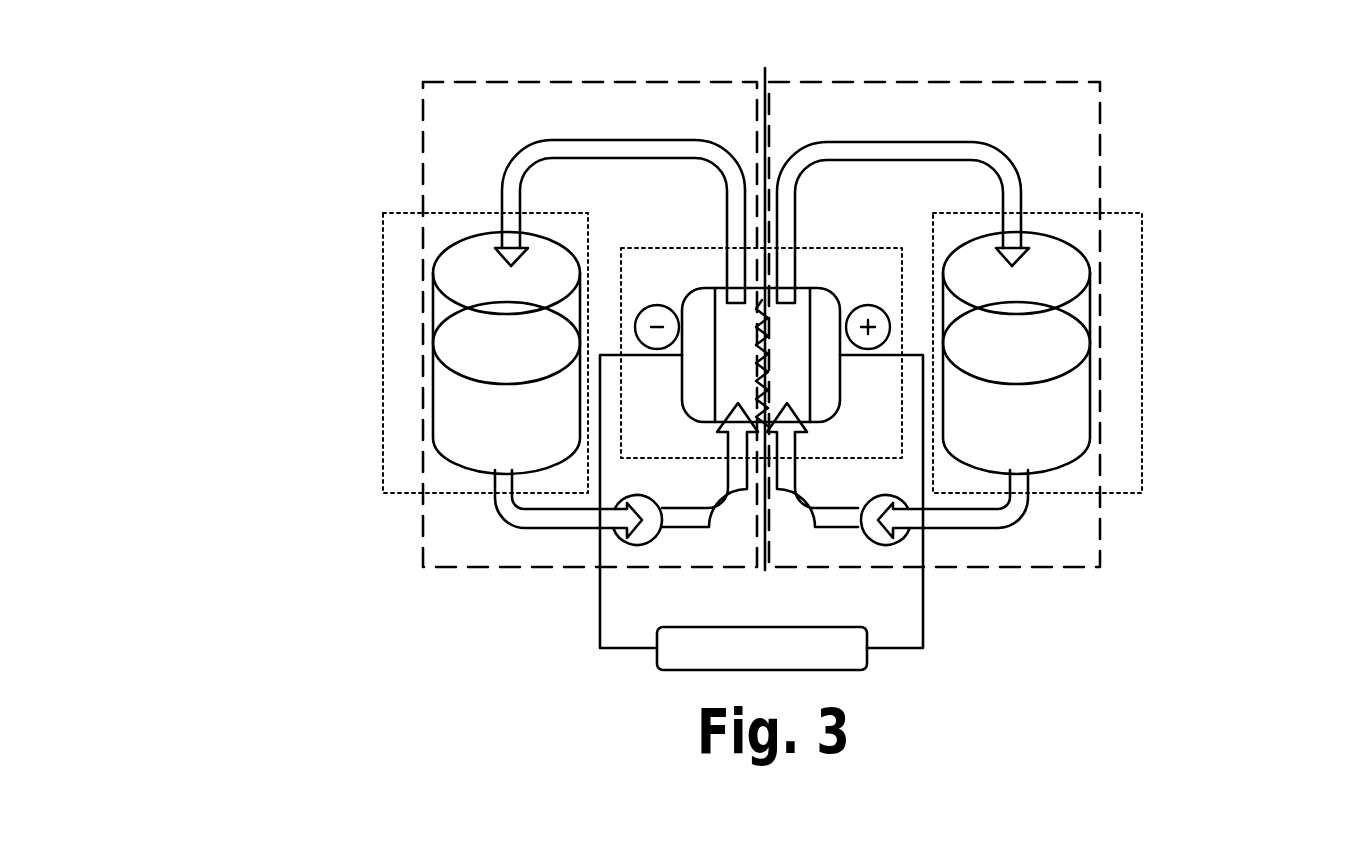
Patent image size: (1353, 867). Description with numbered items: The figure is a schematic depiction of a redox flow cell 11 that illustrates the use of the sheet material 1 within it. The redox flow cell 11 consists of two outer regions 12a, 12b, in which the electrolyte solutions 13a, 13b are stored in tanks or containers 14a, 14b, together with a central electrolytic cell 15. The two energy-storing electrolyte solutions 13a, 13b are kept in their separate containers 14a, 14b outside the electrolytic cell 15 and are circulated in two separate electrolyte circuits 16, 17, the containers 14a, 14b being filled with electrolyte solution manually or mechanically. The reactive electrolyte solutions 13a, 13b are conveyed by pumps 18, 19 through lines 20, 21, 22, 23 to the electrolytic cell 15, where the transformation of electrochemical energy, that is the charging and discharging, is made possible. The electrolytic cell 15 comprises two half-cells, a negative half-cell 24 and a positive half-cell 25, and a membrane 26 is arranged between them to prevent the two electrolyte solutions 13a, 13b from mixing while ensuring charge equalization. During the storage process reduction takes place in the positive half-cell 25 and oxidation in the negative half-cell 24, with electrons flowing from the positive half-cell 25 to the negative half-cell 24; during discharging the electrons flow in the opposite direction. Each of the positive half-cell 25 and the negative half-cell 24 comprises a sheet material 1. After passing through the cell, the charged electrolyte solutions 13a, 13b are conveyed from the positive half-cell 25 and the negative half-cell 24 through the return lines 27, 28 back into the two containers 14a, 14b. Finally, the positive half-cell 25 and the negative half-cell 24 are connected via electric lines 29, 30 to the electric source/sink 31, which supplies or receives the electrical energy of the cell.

The sheet material 1 is at (735, 327).
The redox flow cell 11 is at (830, 46).
The outer region 12a is at (470, 497).
The outer region 12b is at (1067, 493).
The electrolyte solution 13a is at (463, 417).
The electrolyte solution 13b is at (1070, 413).
The container 14a is at (463, 315).
The container 14b is at (1090, 315).
The electrolytic cell 15 is at (850, 248).
The electrolyte circuit 16 is at (513, 81).
The electrolyte circuit 17 is at (1100, 83).
The pump 18 is at (658, 538).
The pump 19 is at (882, 540).
The line 20 is at (555, 530).
The line 21 is at (722, 528).
The line 22 is at (813, 528).
The line 23 is at (983, 530).
The negative half-cell 24 is at (712, 358).
The positive half-cell 25 is at (812, 377).
The membrane 26 is at (752, 303).
The line 27 is at (607, 138).
The line 28 is at (873, 142).
The electric line 29 is at (600, 602).
The electric line 30 is at (923, 620).
The electric source/sink 31 is at (763, 672).